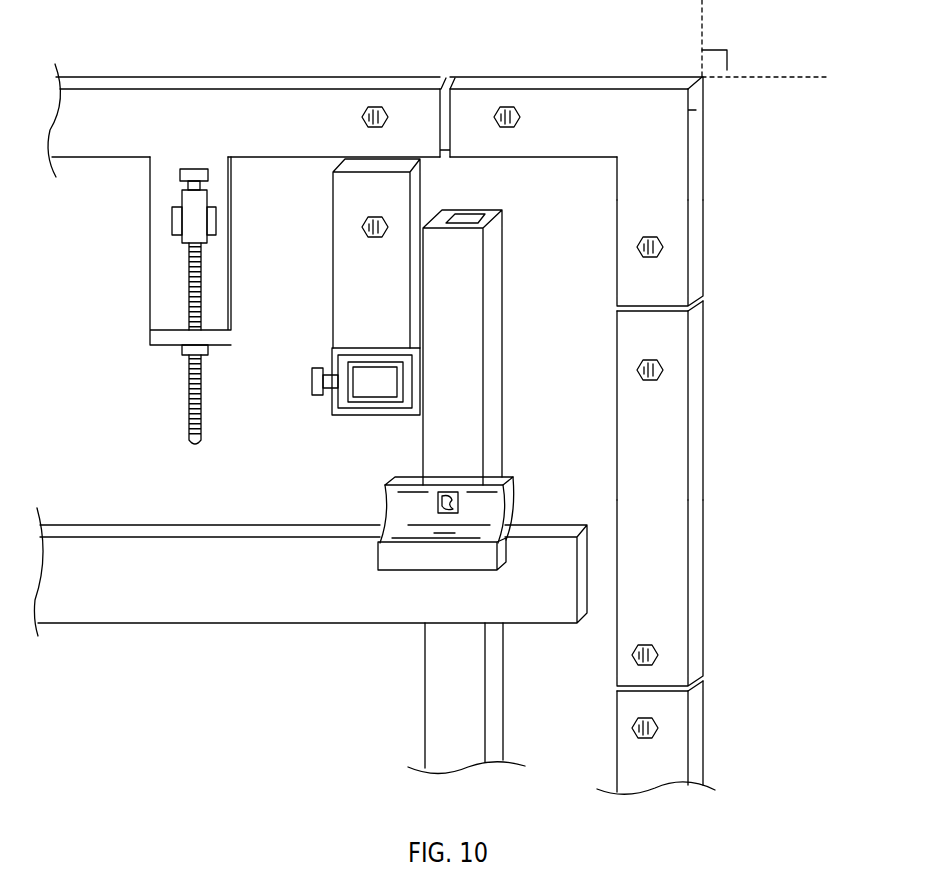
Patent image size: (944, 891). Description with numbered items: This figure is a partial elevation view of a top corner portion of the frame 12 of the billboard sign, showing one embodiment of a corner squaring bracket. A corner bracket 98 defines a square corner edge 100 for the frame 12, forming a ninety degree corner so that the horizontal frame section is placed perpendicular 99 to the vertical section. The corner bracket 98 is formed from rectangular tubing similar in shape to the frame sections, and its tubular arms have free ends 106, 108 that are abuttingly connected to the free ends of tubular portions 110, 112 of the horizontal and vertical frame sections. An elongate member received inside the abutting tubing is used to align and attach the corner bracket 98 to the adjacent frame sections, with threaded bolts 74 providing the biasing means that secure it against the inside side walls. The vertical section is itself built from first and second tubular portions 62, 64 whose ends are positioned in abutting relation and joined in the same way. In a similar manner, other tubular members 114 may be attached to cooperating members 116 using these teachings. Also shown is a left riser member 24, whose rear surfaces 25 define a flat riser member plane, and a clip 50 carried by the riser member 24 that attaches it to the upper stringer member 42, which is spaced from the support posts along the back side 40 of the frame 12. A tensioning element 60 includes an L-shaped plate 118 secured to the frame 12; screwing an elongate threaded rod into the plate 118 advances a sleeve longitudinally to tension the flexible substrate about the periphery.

The frame 12 is at (714, 463).
The left riser member 24 is at (450, 675).
The rear surfaces 25 is at (462, 322).
The back side 40 is at (122, 386).
The upper stringer member 42 is at (188, 552).
The clip 50 is at (395, 505).
The tensioning element 60 is at (163, 240).
The first tubular portion 62 is at (678, 622).
The second tubular portion 64 is at (678, 748).
The threaded bolt 74 is at (372, 103).
The corner bracket 98 is at (726, 90).
The perpendicular relationship 99 is at (718, 50).
The square corner edge 100 is at (688, 110).
The free end of first tubular bracket arm 106 is at (675, 286).
The free end of second tubular bracket arm 108 is at (470, 103).
The tubular portion of frame section 110 is at (675, 343).
The tubular portion of frame section 112 is at (413, 100).
The other tubular member 114 is at (332, 360).
The cooperating member 116 is at (343, 158).
The L-shaped plate 118 is at (160, 160).